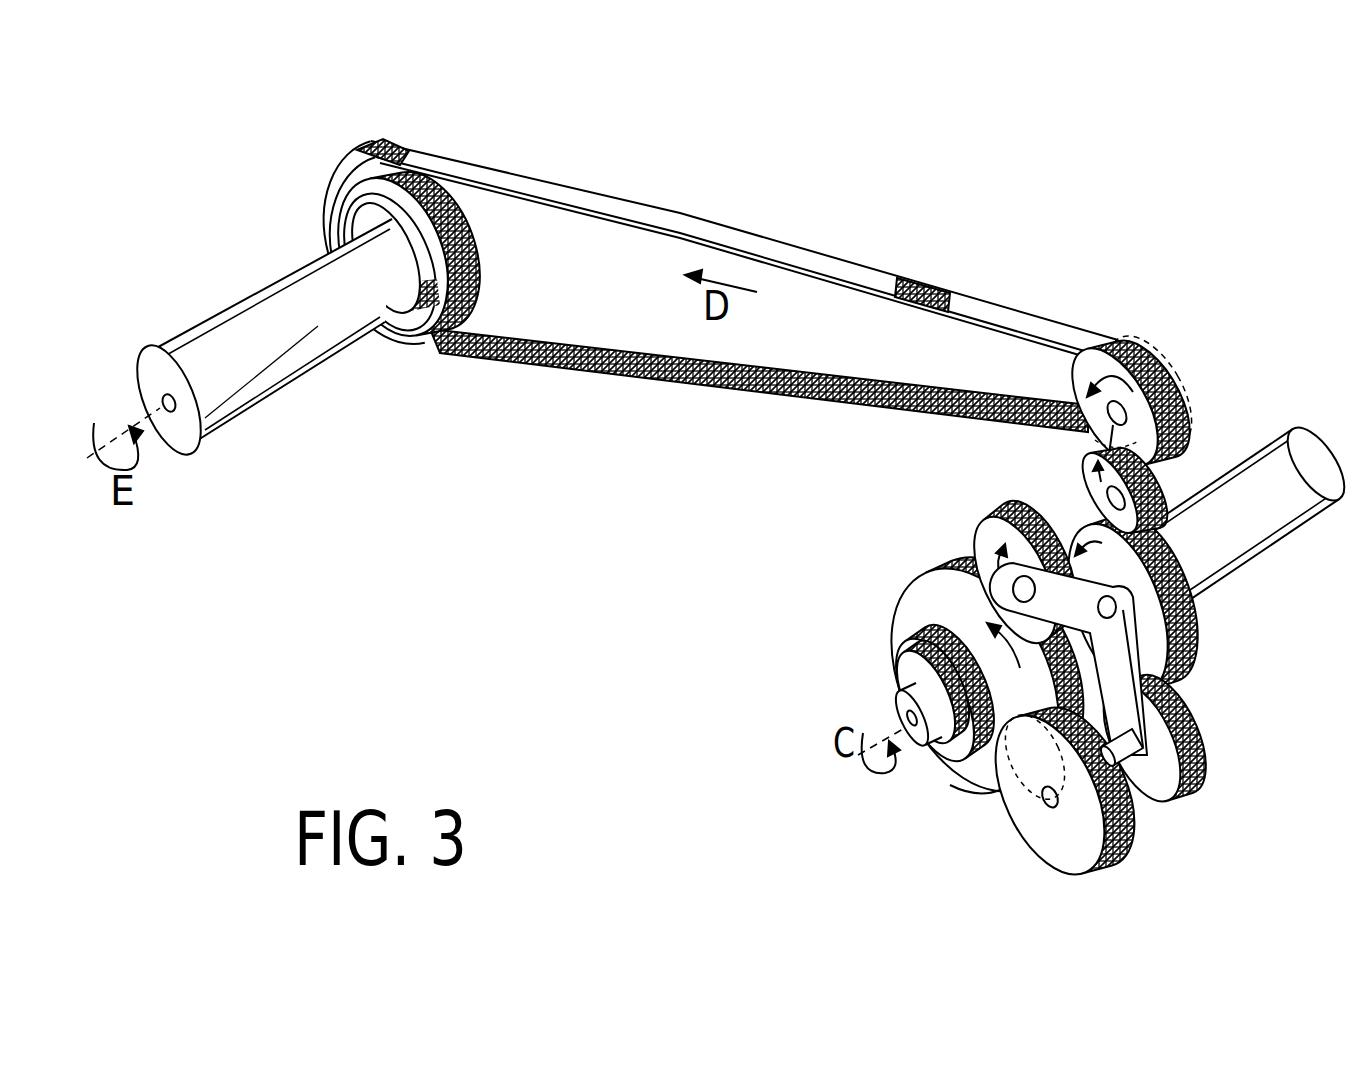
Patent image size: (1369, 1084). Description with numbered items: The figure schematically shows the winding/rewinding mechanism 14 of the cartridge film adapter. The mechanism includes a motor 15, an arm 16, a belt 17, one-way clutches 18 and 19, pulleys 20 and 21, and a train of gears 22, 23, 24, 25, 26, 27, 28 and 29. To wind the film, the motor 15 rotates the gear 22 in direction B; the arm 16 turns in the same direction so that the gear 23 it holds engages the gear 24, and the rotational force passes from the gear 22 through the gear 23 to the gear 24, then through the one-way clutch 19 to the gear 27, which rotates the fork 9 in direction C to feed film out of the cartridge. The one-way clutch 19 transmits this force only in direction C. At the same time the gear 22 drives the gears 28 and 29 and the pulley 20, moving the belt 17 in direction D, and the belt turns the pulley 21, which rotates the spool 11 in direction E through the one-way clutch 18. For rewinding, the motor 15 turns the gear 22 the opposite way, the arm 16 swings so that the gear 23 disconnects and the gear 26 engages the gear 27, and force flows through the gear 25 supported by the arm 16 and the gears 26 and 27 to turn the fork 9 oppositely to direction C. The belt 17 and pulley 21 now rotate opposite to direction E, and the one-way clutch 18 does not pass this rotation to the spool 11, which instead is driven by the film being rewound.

The fork 9 is at (916, 752).
The spool 11 is at (258, 307).
The winding/rewinding mechanism 14 is at (958, 230).
The motor 15 is at (1268, 527).
The arm 16 is at (1120, 647).
The belt 17 is at (590, 195).
The one-way clutch 18 is at (417, 310).
The one-way clutch 19 is at (945, 635).
The pulley 20 is at (1170, 348).
The pulley 21 is at (470, 270).
The gear 22 is at (1090, 478).
The gear 23 is at (1000, 520).
The gear 24 is at (940, 572).
The gear 25 is at (1198, 742).
The gear 26 is at (1123, 818).
The gear 27 is at (973, 792).
The gear 28 is at (1150, 483).
The gear 29 is at (1110, 342).